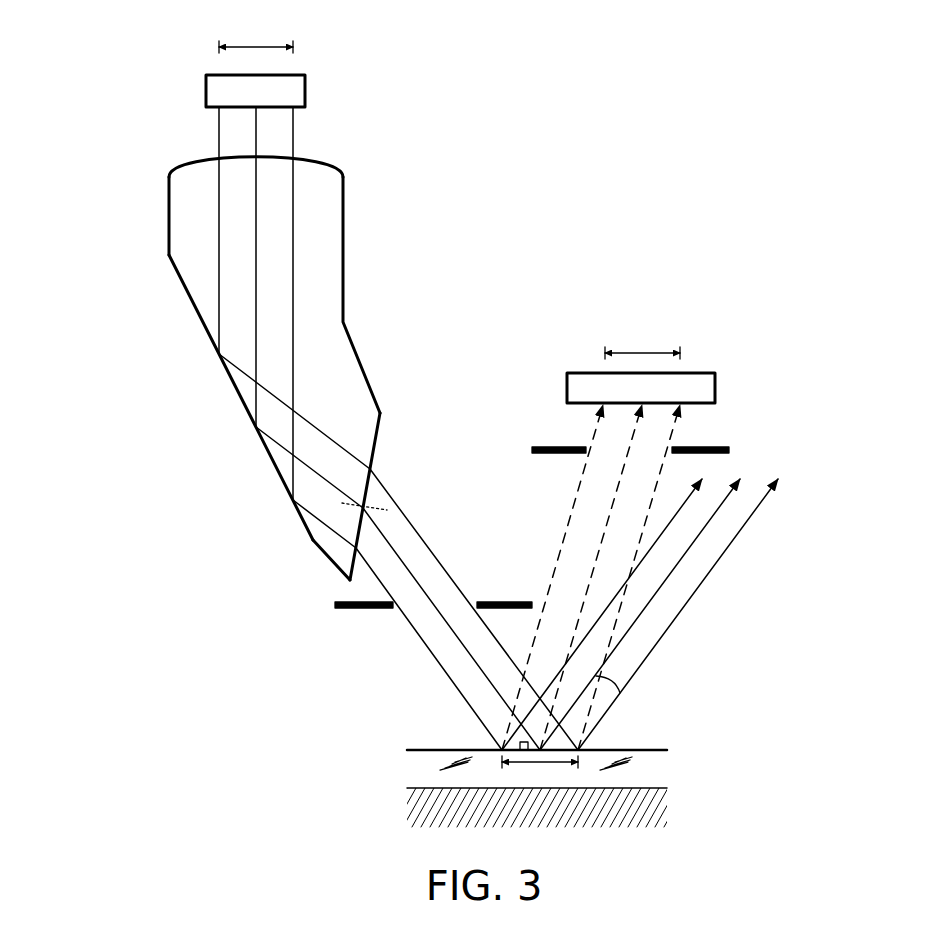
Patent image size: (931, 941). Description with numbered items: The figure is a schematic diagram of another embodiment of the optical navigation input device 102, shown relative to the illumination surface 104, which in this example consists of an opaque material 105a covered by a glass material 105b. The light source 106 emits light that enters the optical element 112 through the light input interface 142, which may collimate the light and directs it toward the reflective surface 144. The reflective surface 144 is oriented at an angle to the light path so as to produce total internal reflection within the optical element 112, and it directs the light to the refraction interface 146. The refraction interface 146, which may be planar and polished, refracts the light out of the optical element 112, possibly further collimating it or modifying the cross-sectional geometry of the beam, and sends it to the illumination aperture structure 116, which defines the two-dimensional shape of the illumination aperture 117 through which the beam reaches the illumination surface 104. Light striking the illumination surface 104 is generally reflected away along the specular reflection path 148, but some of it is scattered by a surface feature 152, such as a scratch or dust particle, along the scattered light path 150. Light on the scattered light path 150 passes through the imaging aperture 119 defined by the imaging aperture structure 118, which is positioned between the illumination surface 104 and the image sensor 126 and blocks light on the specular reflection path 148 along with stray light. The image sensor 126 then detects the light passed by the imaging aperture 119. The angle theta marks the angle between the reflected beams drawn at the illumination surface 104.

The optical navigation input device 102 is at (166, 64).
The light source 106 is at (306, 88).
The light input interface 142 is at (311, 154).
The optical element 112 is at (344, 233).
The reflective surface 144 is at (234, 391).
The refraction interface 146 is at (382, 441).
The illumination aperture 117 is at (451, 600).
The illumination aperture structure 116 is at (340, 608).
The illumination surface 104 is at (658, 746).
The surface feature 152 is at (504, 746).
The specular reflection path 148 is at (707, 570).
The scattered light path 150 is at (572, 518).
The angle of incidence theta is at (608, 680).
The imaging aperture structure 118 is at (718, 448).
The imaging aperture 119 is at (605, 444).
The image sensor 126 is at (716, 380).
The glass material 105b is at (657, 768).
The opaque material 105a is at (657, 805).